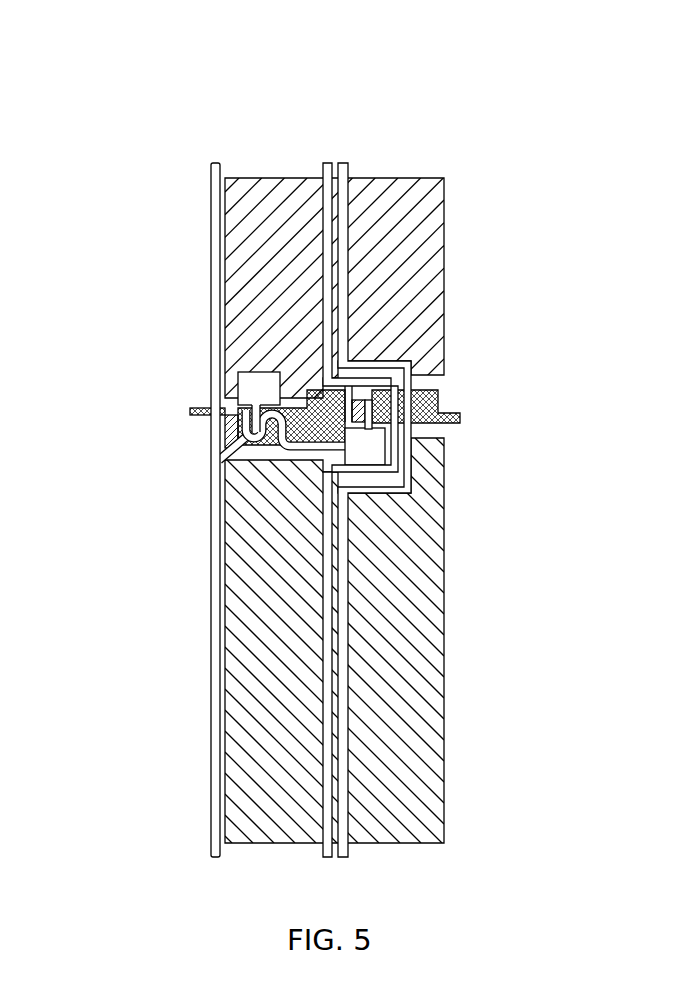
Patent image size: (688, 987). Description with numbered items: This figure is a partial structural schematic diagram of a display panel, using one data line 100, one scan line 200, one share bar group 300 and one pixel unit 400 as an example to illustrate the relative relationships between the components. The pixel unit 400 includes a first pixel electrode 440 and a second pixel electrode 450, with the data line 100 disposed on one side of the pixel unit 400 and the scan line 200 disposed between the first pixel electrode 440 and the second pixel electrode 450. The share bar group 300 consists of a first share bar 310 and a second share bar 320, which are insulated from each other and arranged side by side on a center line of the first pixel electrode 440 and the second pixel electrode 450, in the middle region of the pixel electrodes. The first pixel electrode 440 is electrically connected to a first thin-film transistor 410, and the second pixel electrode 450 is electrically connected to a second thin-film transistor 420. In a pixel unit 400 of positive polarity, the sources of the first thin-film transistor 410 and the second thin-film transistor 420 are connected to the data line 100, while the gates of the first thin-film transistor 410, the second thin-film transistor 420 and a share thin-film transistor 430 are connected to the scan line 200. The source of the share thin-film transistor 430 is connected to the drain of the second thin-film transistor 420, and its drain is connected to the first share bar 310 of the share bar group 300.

The data line 100 is at (215, 238).
The scan line 200 is at (198, 408).
The share bar group 300 is at (332, 436).
The first share bar 310 is at (323, 212).
The second share bar 320 is at (347, 227).
The pixel unit 400 is at (322, 438).
The first thin-film transistor 410 is at (222, 425).
The second thin-film transistor 420 is at (265, 457).
The share thin-film transistor 430 is at (382, 425).
The first pixel electrode 440 is at (427, 250).
The second pixel electrode 450 is at (427, 590).